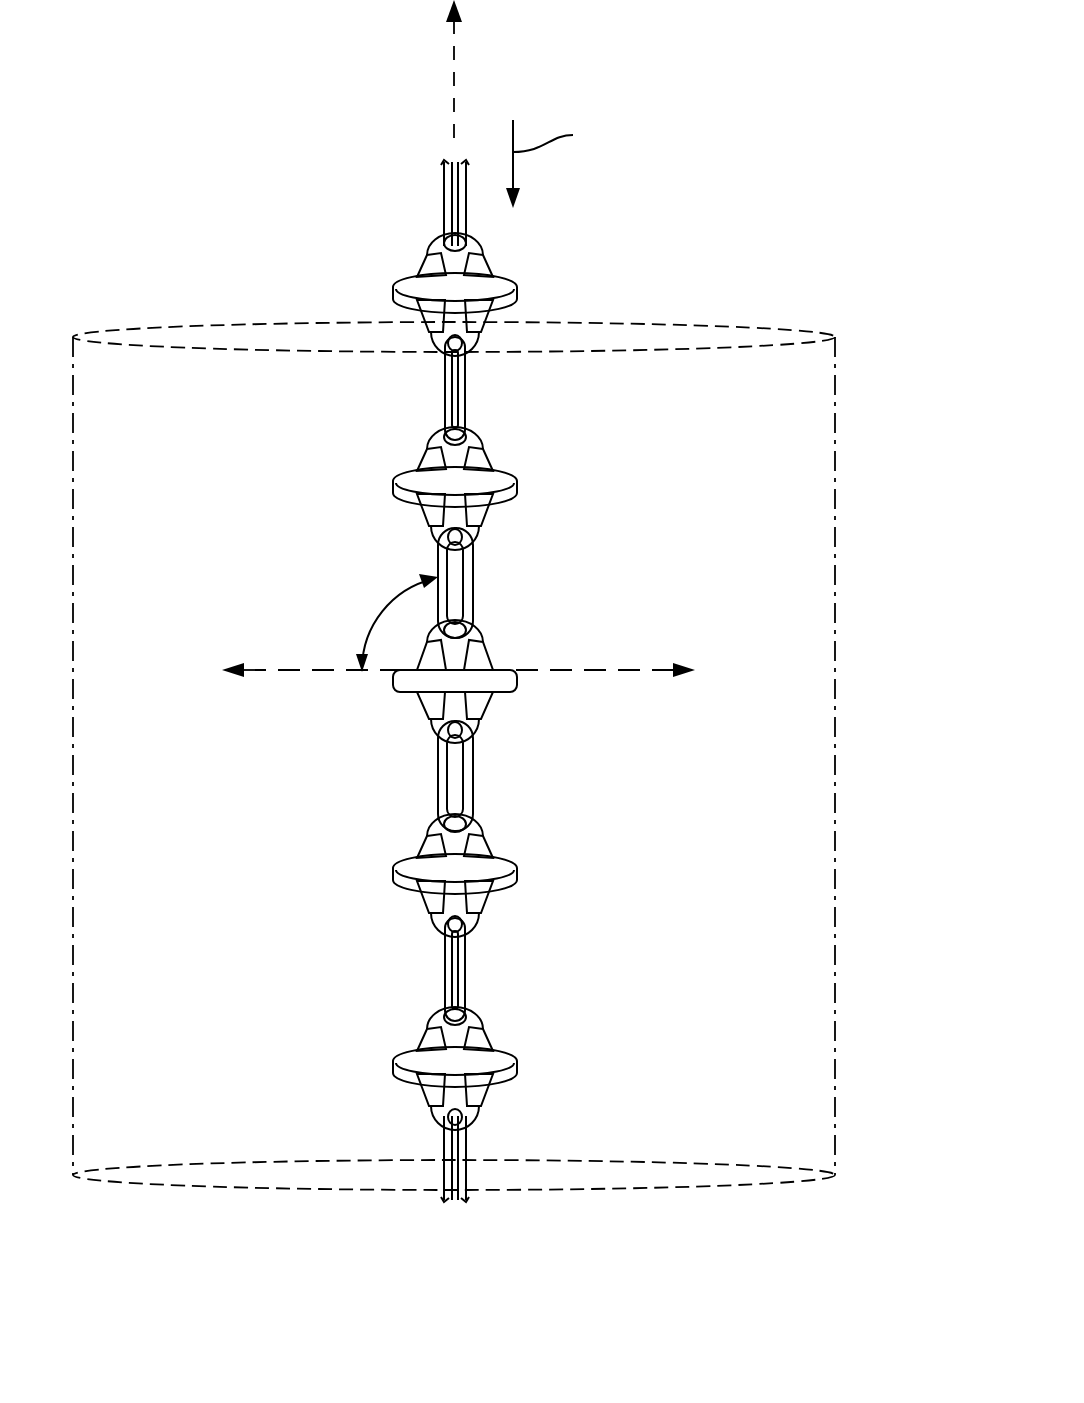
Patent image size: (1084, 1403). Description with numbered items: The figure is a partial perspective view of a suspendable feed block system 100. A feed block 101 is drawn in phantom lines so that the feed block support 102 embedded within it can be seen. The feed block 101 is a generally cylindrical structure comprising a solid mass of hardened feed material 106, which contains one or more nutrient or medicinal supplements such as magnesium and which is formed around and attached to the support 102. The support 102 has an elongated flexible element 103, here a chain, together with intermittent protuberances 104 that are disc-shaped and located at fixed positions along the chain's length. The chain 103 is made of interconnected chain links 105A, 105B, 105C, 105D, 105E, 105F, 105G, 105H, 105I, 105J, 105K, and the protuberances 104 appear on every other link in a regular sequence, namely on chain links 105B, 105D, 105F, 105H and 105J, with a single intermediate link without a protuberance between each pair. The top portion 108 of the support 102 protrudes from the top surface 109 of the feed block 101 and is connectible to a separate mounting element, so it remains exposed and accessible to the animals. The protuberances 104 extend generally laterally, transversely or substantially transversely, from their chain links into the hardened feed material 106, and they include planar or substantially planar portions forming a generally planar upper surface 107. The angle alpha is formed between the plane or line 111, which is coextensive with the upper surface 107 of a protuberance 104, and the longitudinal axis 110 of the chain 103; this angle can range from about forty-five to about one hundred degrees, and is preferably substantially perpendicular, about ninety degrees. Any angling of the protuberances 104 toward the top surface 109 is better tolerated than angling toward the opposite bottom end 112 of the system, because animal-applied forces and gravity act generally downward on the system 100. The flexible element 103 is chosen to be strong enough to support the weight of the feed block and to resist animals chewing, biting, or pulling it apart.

The suspendable feed block system 100 is at (722, 266).
The feed block 101 is at (835, 355).
The feed block support 102 is at (482, 392).
The elongated flexible element 103 is at (472, 560).
The protuberances 104 is at (507, 680).
The chain link 105A is at (445, 190).
The chain link 105B is at (488, 263).
The chain link 105C is at (450, 395).
The chain link 105D is at (490, 460).
The chain link 105E is at (472, 594).
The chain link 105F is at (397, 684).
The chain link 105G is at (472, 781).
The chain link 105H is at (395, 869).
The chain link 105I is at (467, 957).
The chain link 105J is at (425, 1050).
The chain link 105K is at (472, 1143).
The hardened feed material 106 is at (173, 427).
The planar upper surface 107 is at (505, 668).
The top portion 108 is at (388, 258).
The top surface 109 is at (150, 325).
The longitudinal axis 110 is at (462, 60).
The plane or line 111 is at (628, 670).
The bottom end 112 is at (163, 1185).